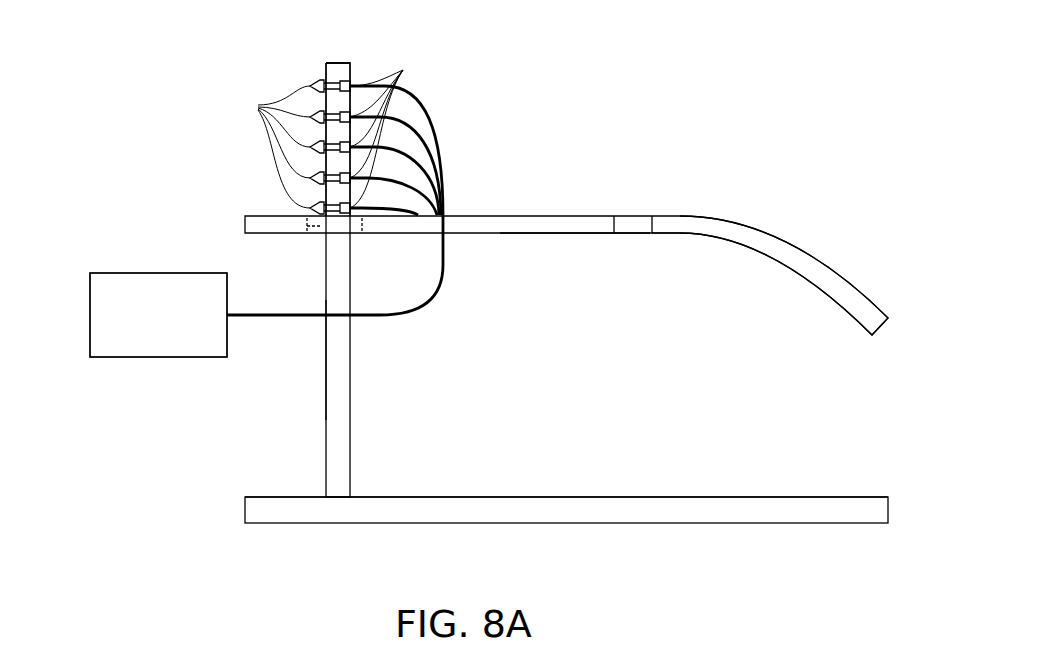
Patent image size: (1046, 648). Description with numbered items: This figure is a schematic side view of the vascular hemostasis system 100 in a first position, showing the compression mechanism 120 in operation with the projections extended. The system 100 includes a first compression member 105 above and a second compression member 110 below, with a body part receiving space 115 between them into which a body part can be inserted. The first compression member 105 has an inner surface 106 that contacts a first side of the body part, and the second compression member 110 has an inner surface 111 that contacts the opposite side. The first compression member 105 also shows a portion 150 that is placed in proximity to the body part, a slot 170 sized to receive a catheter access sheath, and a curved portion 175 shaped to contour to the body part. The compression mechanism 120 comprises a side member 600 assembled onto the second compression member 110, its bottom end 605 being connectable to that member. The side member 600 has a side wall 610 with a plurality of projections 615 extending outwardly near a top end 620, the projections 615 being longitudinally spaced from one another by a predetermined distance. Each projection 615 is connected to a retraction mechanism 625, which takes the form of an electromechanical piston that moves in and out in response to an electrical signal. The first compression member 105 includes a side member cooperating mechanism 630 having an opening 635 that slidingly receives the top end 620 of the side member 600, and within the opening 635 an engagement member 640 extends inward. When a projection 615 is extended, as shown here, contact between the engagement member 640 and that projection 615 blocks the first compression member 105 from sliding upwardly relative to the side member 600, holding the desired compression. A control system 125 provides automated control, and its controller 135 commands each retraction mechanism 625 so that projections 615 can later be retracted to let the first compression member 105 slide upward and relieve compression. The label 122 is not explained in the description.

The vascular hemostasis system 100 is at (692, 87).
The first compression member 105 is at (557, 216).
The inner surface 106 is at (567, 240).
The second compression member 110 is at (733, 497).
The inner surface 111 is at (643, 495).
The body part receiving space 115 is at (598, 388).
The compression mechanism 120 is at (175, 135).
The nozzle array 122 is at (165, 82).
The control system 125 is at (90, 380).
The controller 135 is at (158, 357).
The portion 150 is at (677, 245).
The slot 170 is at (637, 223).
The curved portion 175 is at (845, 255).
The side member 600 is at (340, 415).
The bottom end 605 is at (365, 483).
The side wall 610 is at (326, 365).
The projections 615 is at (260, 147).
The top end 620 is at (298, 70).
The retraction mechanism 625 is at (400, 132).
The side member cooperating mechanism 630 is at (262, 198).
The opening 635 is at (362, 233).
The engagement member 640 is at (310, 233).